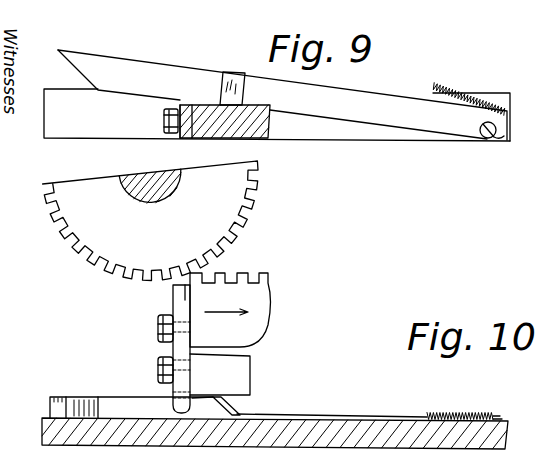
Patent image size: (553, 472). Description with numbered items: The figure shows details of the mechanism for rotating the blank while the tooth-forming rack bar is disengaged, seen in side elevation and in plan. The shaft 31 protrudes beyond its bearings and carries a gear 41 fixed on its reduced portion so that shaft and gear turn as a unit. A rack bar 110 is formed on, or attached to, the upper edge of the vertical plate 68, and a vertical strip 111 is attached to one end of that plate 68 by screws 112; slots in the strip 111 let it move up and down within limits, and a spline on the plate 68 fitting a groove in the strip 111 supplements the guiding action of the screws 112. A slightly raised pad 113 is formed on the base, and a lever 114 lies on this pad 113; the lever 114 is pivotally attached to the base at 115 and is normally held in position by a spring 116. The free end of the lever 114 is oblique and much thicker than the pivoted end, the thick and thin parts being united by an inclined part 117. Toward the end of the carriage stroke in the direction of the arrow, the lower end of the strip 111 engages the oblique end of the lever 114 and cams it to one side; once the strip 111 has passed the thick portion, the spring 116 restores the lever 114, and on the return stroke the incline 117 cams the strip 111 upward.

In FIG. 9, the shaft 31 is at (163, 183).
In FIG. 9, the gear 41 is at (232, 186).
In FIG. 10, the vertical plate 68 is at (233, 327).
In FIG. 9, the rack bar 110 is at (225, 121).
In FIG. 10, the rack bar 110 is at (240, 283).
In FIG. 9, the vertical strip 111 is at (180, 104).
In FIG. 10, the vertical strip 111 is at (173, 307).
In FIG. 9, the screws 112 is at (160, 127).
In FIG. 10, the screws 112 is at (158, 361).
In FIG. 9, the raised pad 113 is at (93, 119).
In FIG. 9, the lever 114 is at (380, 110).
In FIG. 10, the lever 114 is at (138, 407).
In FIG. 9, the pivot 115 is at (483, 140).
In FIG. 9, the spring 116 is at (450, 88).
In FIG. 10, the spring 116 is at (462, 412).
In FIG. 9, the inclined part 117 is at (233, 72).
In FIG. 10, the inclined part 117 is at (237, 412).